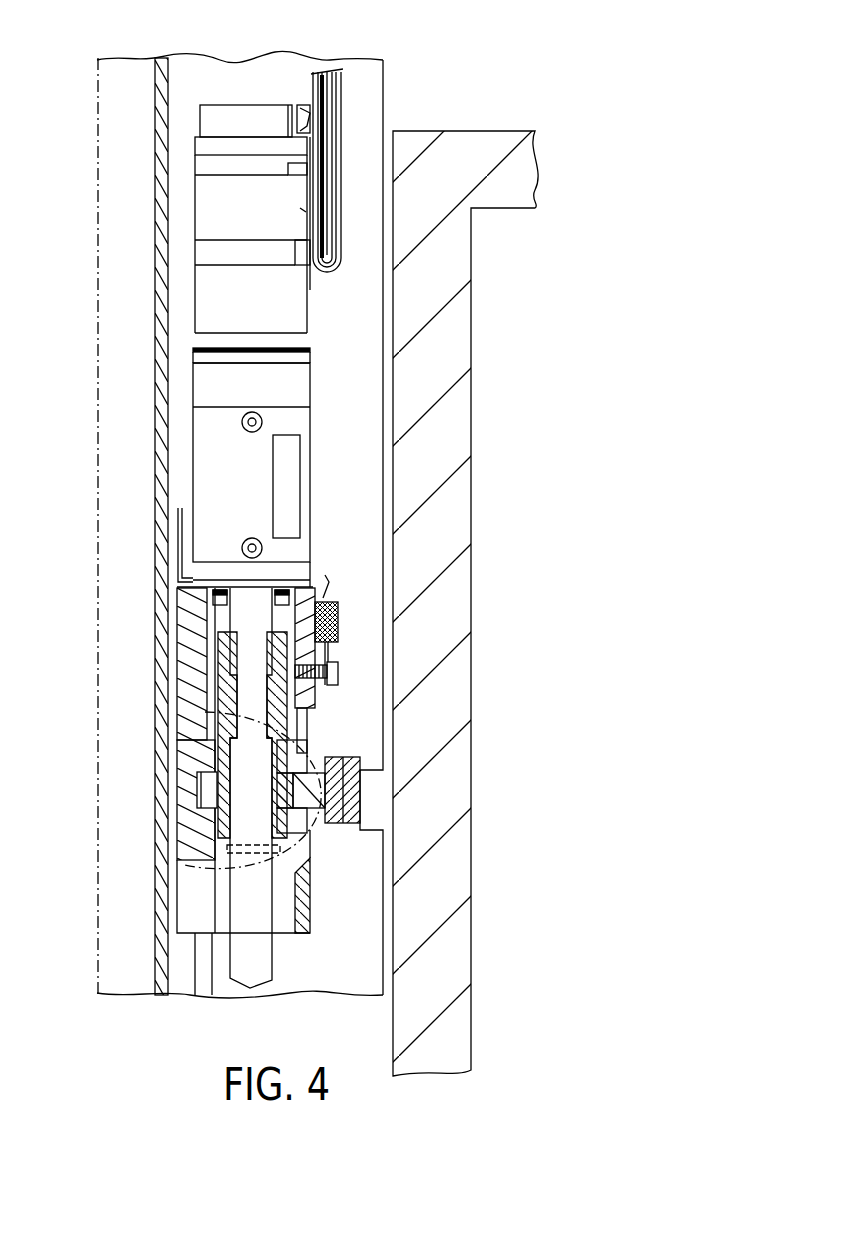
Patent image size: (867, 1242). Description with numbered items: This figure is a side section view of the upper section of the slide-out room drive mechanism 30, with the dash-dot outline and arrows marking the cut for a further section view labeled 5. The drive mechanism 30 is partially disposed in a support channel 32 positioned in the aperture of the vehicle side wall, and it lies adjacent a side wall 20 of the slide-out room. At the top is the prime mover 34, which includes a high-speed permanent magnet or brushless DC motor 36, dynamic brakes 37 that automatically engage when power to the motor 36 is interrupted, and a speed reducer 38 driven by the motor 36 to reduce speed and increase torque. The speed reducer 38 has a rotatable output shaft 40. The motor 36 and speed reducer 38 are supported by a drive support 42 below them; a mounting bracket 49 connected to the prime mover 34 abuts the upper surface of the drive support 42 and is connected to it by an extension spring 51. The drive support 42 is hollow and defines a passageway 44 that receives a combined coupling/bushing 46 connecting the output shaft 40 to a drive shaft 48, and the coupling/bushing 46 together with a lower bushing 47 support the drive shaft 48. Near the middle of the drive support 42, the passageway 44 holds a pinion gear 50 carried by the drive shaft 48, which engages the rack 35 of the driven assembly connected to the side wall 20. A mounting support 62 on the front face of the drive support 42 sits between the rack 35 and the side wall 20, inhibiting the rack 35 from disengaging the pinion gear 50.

The side wall 20 is at (473, 262).
The slide-out room drive mechanism 30 is at (343, 567).
The support channel 32 is at (155, 135).
The prime mover 34 is at (192, 361).
The rack 35 is at (315, 760).
The motor 36 is at (194, 297).
The dynamic brakes 37 is at (303, 103).
The speed reducer 38 is at (192, 483).
The output shaft 40 is at (230, 619).
The drive support 42 is at (207, 688).
The passageway 44 is at (196, 697).
The combined coupling/bushing 46 is at (320, 660).
The lower bushing 47 is at (322, 845).
The drive shaft 48 is at (232, 955).
The mounting bracket 49 is at (180, 575).
The pinion gear 50 is at (197, 789).
The extension spring 51 is at (335, 598).
The mounting support 62 is at (320, 825).
The section line 5 is at (205, 712).